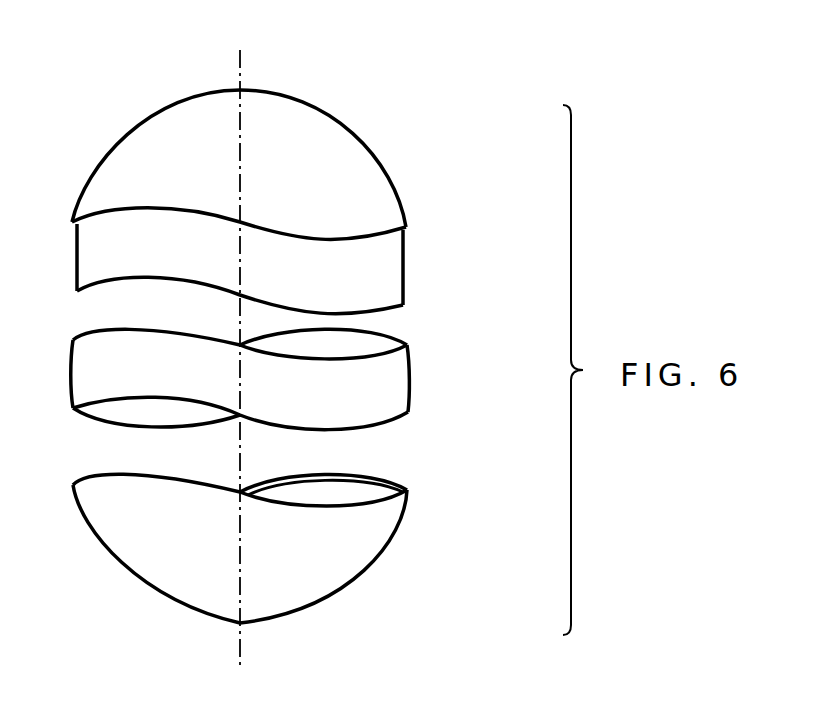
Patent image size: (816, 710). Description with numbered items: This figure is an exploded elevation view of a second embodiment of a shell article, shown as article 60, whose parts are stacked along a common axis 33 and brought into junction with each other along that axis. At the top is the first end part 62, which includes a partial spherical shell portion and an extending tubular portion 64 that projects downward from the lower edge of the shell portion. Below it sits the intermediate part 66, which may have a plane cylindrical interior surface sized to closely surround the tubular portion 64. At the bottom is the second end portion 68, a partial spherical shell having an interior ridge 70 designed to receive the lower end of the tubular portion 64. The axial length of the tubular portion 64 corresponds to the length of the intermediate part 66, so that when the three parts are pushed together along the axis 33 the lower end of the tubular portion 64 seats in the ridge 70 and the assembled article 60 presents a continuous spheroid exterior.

The axis 33 is at (242, 65).
The article 60 is at (43, 276).
The first end part 62 is at (333, 139).
The tubular portion 64 is at (403, 275).
The intermediate part 66 is at (383, 391).
The second end portion 68 is at (380, 540).
The interior ridge 70 is at (380, 474).